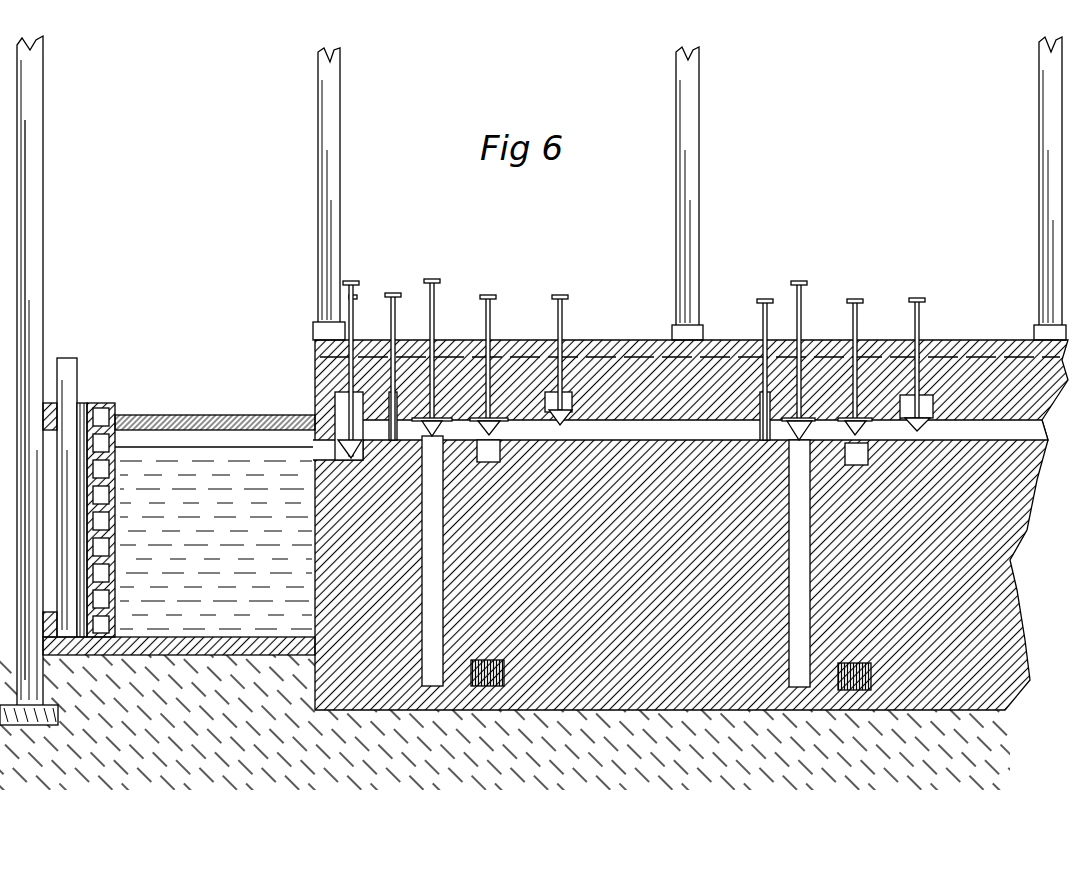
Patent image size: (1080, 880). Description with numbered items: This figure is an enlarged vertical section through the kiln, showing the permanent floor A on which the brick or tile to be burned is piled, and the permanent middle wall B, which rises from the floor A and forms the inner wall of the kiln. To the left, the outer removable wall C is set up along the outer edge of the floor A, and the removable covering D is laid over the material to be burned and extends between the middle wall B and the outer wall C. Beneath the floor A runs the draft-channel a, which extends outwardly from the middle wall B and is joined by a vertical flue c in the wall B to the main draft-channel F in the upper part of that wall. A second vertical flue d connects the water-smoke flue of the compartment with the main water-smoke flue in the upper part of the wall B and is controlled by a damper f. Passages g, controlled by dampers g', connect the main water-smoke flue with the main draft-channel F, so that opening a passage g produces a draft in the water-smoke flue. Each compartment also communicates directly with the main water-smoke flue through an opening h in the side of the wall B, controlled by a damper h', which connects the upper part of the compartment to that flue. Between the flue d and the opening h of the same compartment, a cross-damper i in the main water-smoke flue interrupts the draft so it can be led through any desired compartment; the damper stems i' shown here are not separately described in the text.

The floor A is at (179, 551).
The wall B is at (1012, 566).
The outer removable wall C is at (115, 412).
The removable covering D is at (221, 419).
The main draft-channel F is at (626, 338).
The draft-channel a is at (493, 683).
The vertical flue c is at (1050, 429).
The vertical flue d is at (432, 680).
The damper f is at (433, 280).
The passage g is at (756, 360).
The damper g' is at (749, 347).
The opening h is at (569, 438).
The damper h' is at (612, 342).
The cross-damper i is at (350, 342).
The anchor bolt i' is at (579, 355).